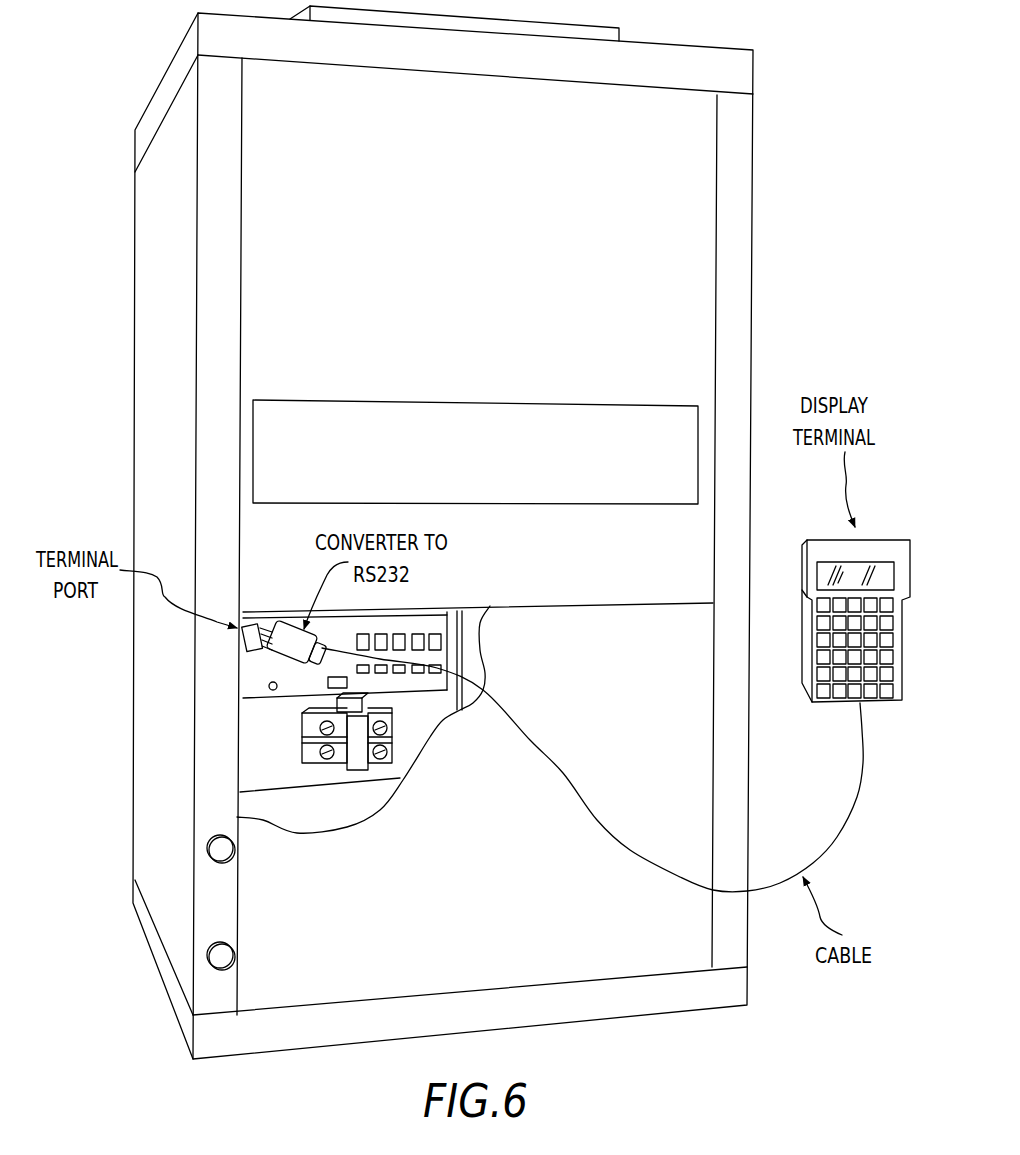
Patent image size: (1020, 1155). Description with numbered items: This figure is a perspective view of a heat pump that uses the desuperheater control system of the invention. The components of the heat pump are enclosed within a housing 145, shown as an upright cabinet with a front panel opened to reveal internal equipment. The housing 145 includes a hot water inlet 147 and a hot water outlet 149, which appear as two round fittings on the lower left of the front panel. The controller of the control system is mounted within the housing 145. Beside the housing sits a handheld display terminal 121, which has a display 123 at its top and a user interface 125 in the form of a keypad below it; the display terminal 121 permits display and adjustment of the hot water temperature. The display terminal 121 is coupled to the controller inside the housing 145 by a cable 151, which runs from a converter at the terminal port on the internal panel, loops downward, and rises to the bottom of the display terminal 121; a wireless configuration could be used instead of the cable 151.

The housing 145 is at (753, 150).
The hot water inlet 147 is at (235, 958).
The hot water outlet 149 is at (236, 853).
The display terminal 121 is at (834, 667).
The display 123 is at (820, 582).
The user interface 125 is at (893, 702).
The cable 151 is at (835, 843).